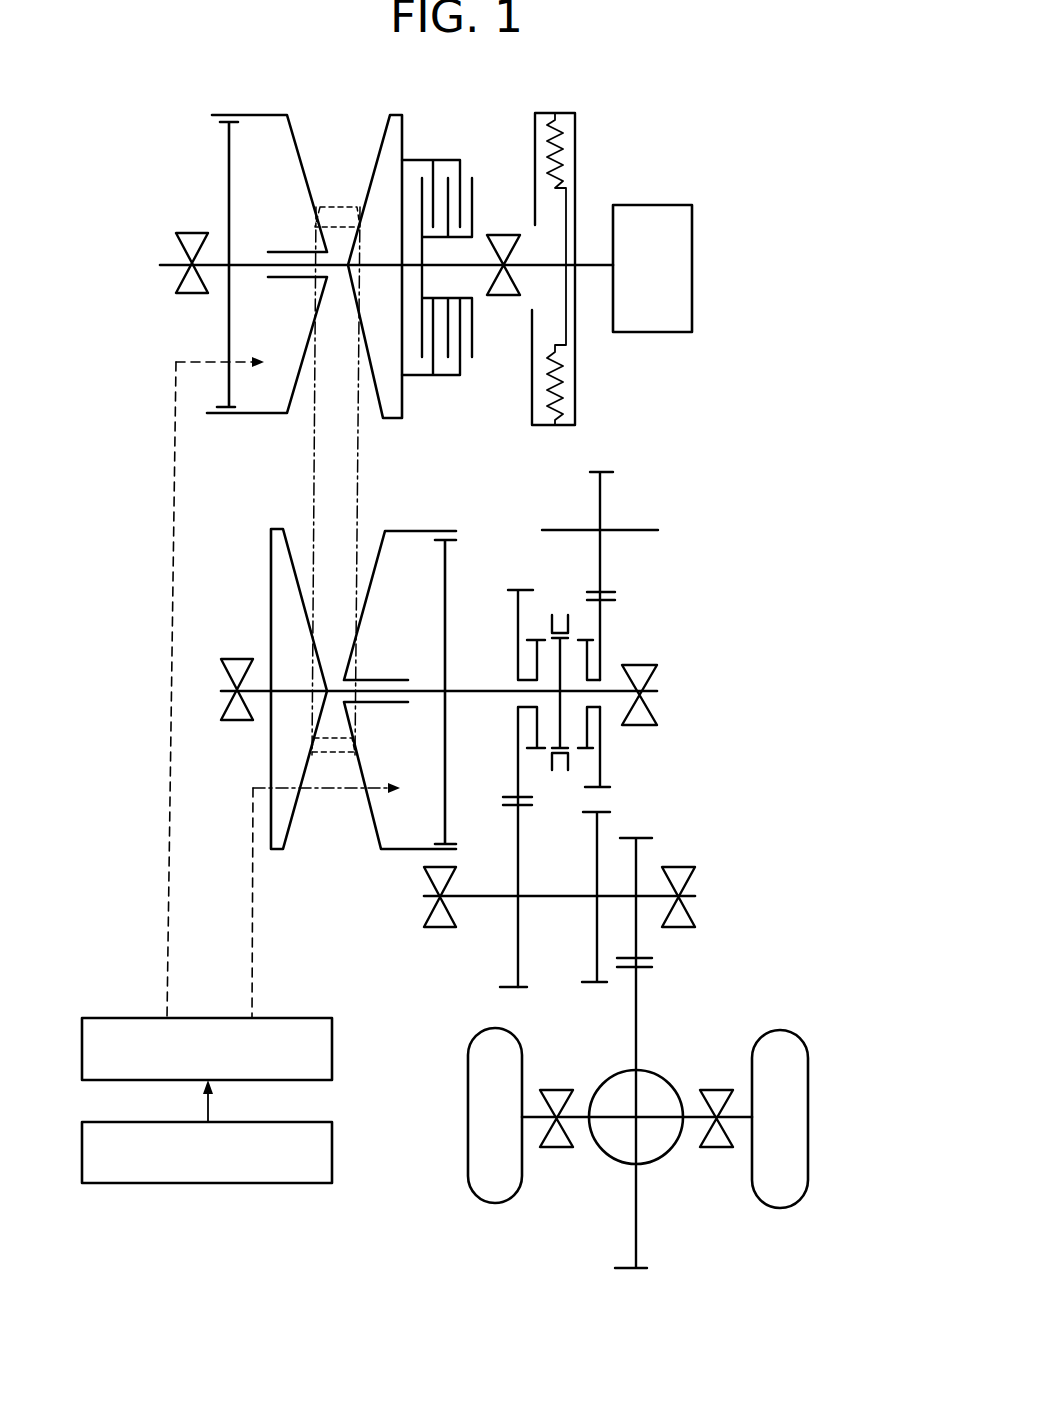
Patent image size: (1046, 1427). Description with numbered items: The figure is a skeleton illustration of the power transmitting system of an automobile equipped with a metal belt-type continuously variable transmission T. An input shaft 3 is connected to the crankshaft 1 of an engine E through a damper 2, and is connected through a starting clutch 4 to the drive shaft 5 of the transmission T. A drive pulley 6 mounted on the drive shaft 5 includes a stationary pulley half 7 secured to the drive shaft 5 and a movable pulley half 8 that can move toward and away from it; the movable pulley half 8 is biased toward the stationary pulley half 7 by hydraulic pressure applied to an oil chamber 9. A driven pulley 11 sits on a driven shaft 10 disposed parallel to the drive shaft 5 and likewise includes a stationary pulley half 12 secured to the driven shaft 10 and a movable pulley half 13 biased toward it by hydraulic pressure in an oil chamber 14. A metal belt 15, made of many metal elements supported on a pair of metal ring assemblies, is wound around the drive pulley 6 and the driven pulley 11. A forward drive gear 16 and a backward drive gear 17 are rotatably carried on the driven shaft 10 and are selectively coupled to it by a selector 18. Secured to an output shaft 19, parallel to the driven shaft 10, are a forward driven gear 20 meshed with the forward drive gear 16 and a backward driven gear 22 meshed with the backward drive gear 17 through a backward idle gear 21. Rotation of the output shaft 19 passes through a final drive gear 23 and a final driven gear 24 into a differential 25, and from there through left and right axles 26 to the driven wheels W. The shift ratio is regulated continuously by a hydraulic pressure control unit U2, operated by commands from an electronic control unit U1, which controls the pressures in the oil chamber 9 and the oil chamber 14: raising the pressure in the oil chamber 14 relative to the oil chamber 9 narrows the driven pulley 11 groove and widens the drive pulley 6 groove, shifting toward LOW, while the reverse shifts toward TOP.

The crankshaft 1 is at (592, 270).
The damper 2 is at (583, 160).
The input shaft 3 is at (527, 262).
The starting clutch 4 is at (447, 153).
The drive shaft 5 is at (247, 262).
The drive pulley 6 is at (289, 243).
The stationary pulley half 7 is at (385, 148).
The movable pulley half 8 is at (293, 150).
The oil chamber 9 is at (282, 338).
The driven shaft 10 is at (493, 692).
The driven pulley 11 is at (333, 724).
The stationary pulley half 12 is at (271, 565).
The movable pulley half 13 is at (380, 560).
The oil chamber 14 is at (406, 779).
The metal belt 15 is at (359, 481).
The forward drive gear 16 is at (515, 588).
The backward drive gear 17 is at (610, 602).
The selector 18 is at (558, 770).
The output shaft 19 is at (542, 895).
The forward driven gear 20 is at (522, 990).
The backward idle gear 21 is at (612, 472).
The backward driven gear 22 is at (585, 983).
The final drive gear 23 is at (647, 835).
The final driven gear 24 is at (650, 967).
The differential 25 is at (662, 1075).
The axles 26 is at (572, 1120).
The engine E is at (643, 284).
The metal belt-type continuously variable transmission T is at (262, 463).
The driven wheels W is at (466, 1168).
The electronic control unit U1 is at (333, 1145).
The hydraulic pressure control unit U2 is at (333, 1051).